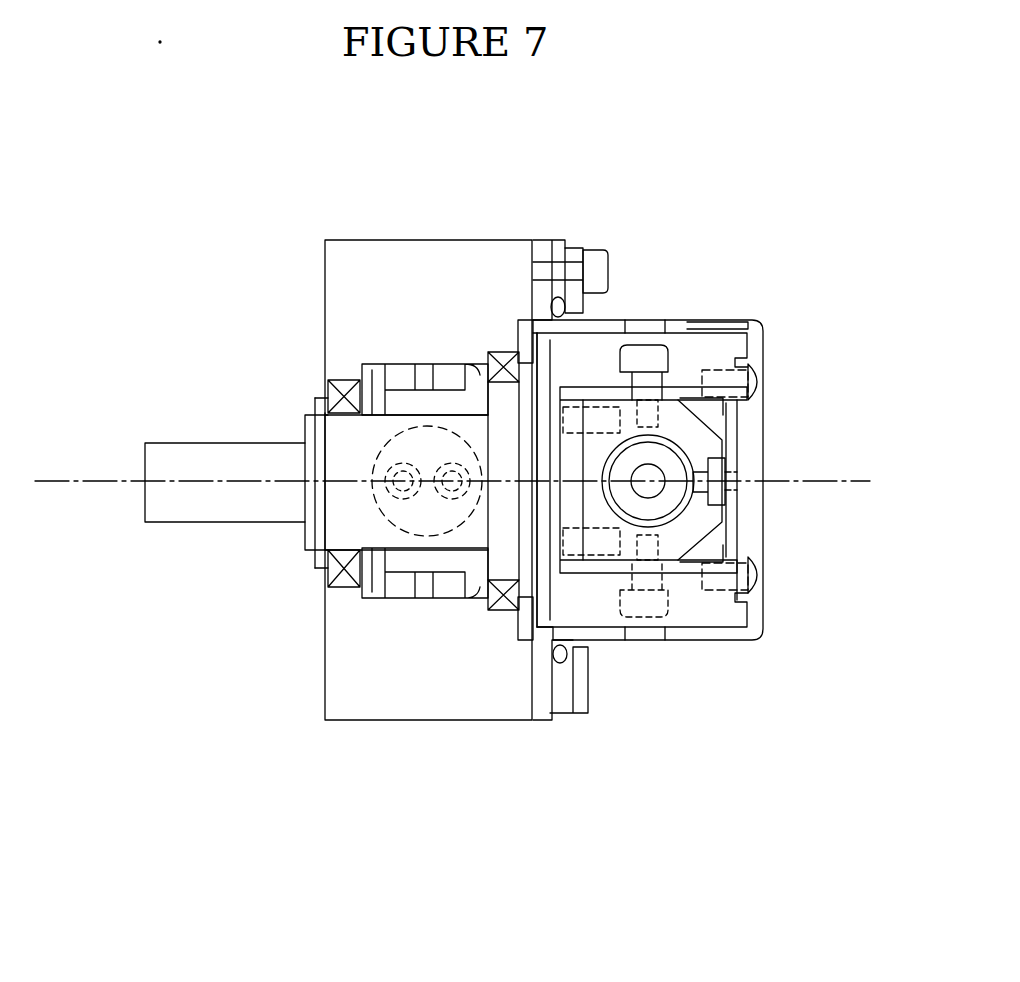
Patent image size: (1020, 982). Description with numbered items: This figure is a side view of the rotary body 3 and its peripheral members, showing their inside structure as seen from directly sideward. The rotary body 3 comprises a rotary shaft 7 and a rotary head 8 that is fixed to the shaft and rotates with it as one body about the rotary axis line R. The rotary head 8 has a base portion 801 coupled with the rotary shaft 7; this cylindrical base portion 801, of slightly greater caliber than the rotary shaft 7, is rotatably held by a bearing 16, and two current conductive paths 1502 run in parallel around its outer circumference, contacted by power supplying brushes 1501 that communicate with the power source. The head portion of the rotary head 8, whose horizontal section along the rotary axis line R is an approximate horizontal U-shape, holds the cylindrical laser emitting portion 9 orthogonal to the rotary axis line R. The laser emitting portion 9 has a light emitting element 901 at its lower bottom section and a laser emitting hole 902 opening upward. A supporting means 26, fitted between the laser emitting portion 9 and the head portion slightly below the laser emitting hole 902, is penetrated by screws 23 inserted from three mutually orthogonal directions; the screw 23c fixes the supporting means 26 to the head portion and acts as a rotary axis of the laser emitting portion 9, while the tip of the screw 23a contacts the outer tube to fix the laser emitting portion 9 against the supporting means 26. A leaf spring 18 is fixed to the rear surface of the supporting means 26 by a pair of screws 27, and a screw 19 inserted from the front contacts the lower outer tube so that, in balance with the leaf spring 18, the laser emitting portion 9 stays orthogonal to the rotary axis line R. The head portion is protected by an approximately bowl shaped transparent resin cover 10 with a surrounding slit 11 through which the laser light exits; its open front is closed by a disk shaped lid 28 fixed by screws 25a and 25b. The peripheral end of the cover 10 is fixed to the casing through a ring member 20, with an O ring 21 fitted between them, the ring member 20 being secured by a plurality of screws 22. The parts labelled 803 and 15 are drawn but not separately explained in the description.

The rotary body 3 is at (788, 323).
The rotary shaft 7 is at (242, 470).
The rotary head 8 is at (510, 430).
The base portion 801 is at (352, 442).
The rotor flange 803 is at (556, 490).
The laser emitting portion 9 is at (760, 525).
The light emitting element 901 is at (767, 418).
The laser emitting hole 902 is at (767, 565).
The cover 10 is at (592, 328).
The slit 11 is at (643, 328).
The stator 15 is at (442, 512).
The power supplying brushes 1501 is at (397, 490).
The current conductive paths 1502 is at (450, 377).
The bearing 16 is at (343, 383).
The leaf spring 18 is at (648, 505).
The screw 19 is at (773, 497).
The ring member 20 is at (574, 253).
The O ring 21 is at (552, 298).
The screws 22 is at (595, 268).
The screws 23 is at (658, 363).
The screw 23a is at (767, 477).
The screw 23c is at (663, 603).
The screw 25a is at (767, 380).
The screw 25b is at (767, 583).
The supporting means 26 is at (703, 445).
The screws 27 is at (568, 413).
The lid 28 is at (740, 548).
The rotary axis line R is at (90, 483).